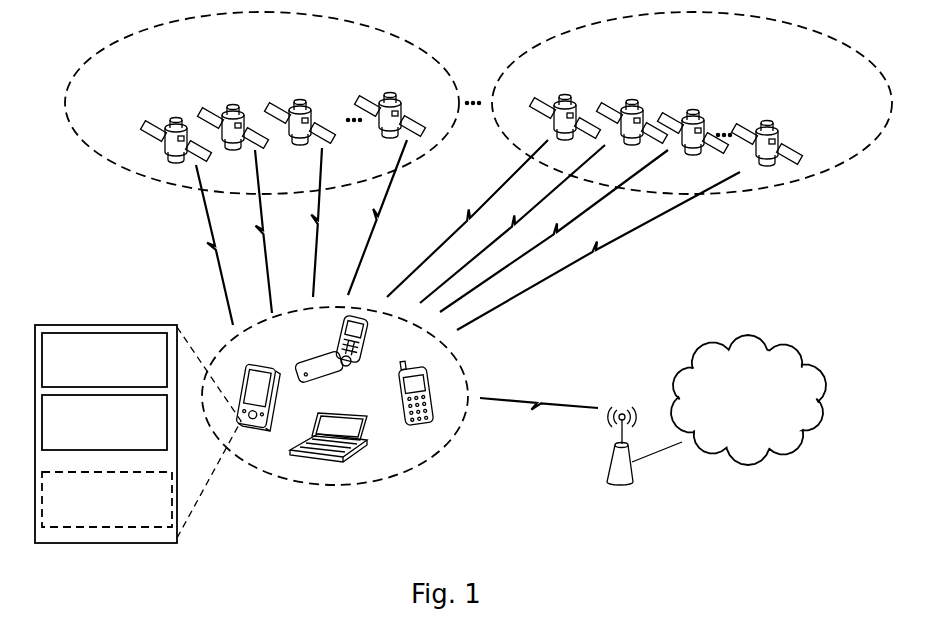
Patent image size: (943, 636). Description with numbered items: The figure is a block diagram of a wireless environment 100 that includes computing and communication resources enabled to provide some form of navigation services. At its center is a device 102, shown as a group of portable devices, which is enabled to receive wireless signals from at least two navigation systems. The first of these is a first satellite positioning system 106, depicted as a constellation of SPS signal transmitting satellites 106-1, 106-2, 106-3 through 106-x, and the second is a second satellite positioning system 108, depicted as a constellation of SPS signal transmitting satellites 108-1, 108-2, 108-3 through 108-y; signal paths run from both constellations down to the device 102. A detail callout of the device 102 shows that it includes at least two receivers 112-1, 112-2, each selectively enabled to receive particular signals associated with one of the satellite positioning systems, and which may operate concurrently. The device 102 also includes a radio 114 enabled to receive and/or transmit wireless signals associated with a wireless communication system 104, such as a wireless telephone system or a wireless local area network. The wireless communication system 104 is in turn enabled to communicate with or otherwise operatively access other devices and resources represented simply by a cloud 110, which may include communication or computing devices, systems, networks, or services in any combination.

The wireless environment 100 is at (144, 447).
The device 102 is at (335, 485).
The wireless communication system 104 is at (612, 490).
The first satellite positioning system 106 is at (175, 188).
The SPS signal transmitting satellite 106-1 is at (177, 121).
The SPS signal transmitting satellite 106-2 is at (233, 106).
The SPS signal transmitting satellite 106-3 is at (298, 99).
The SPS signal transmitting satellite 106-x is at (388, 93).
The second satellite positioning system 108 is at (782, 187).
The SPS signal transmitting satellite 108-1 is at (567, 95).
The SPS signal transmitting satellite 108-2 is at (658, 100).
The SPS signal transmitting satellite 108-3 is at (725, 110).
The SPS signal transmitting satellite 108-y is at (782, 122).
The cloud 110 is at (735, 467).
The receiver 112-1 is at (104, 360).
The receiver 112-2 is at (104, 422).
The radio 114 is at (107, 499).